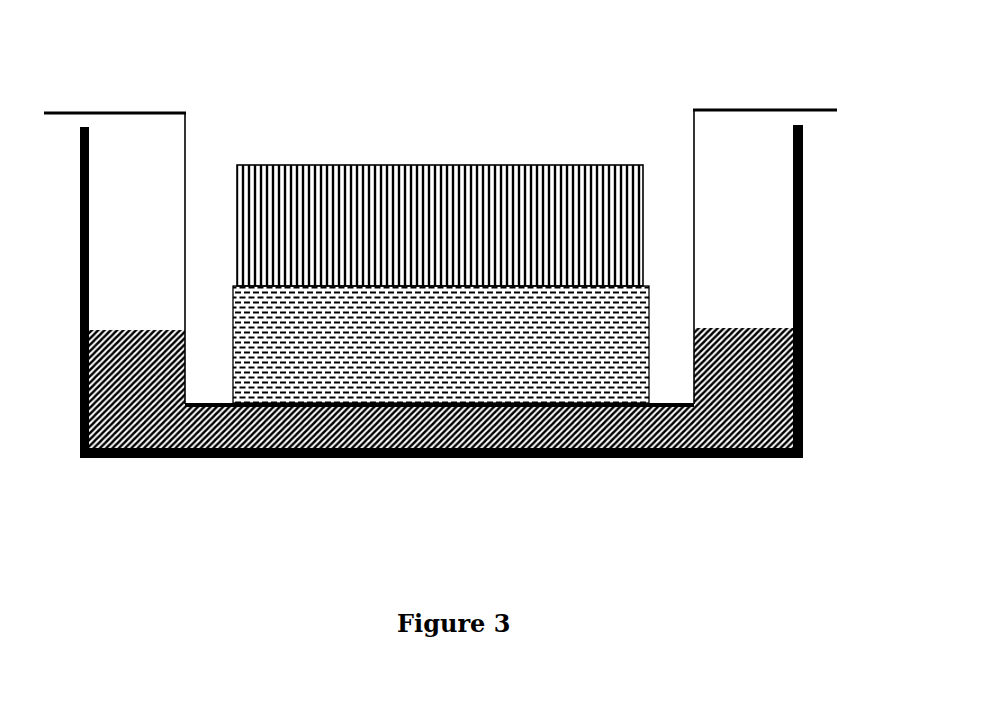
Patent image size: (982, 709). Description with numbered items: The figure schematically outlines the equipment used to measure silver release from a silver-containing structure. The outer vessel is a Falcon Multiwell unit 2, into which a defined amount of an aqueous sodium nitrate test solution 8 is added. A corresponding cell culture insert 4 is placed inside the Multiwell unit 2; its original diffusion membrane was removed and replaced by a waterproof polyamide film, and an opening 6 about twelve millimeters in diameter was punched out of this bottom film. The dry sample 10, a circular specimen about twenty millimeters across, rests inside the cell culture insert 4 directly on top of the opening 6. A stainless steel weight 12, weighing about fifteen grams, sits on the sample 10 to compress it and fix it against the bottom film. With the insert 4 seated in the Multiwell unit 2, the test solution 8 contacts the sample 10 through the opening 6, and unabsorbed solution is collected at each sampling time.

The Multiwell unit 2 is at (803, 260).
The cell culture insert 4 is at (748, 109).
The opening 6 is at (463, 405).
The test solution 8 is at (708, 428).
The sample 10 is at (342, 363).
The weight 12 is at (438, 222).